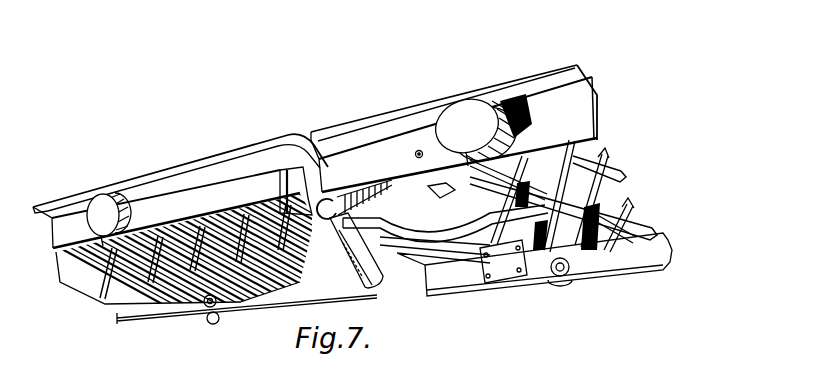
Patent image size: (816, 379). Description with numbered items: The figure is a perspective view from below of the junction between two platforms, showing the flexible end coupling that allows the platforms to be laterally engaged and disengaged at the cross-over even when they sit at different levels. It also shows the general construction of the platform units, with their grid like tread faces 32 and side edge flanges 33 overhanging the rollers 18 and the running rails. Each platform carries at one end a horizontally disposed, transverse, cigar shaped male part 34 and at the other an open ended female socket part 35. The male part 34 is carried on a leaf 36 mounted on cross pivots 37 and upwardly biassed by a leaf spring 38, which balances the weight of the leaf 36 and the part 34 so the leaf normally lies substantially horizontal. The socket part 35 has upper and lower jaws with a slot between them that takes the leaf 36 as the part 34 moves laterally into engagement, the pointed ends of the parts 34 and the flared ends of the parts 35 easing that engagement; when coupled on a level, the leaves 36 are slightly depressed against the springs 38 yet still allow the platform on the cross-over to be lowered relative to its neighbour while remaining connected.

The rollers 18 is at (106, 200).
The grid like tread faces 32 is at (607, 152).
The side edge flanges 33 is at (214, 166).
The cigar shaped male part 34 is at (332, 200).
The female socket part 35 is at (377, 280).
The leaf 36 is at (433, 250).
The cross pivots 37 is at (434, 192).
The leaf spring 38 is at (458, 238).